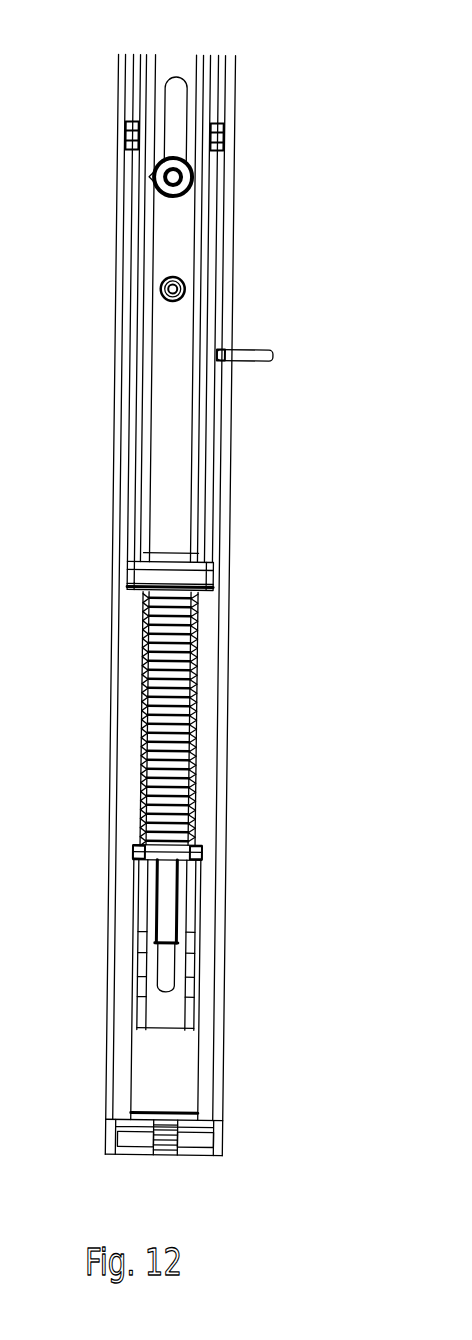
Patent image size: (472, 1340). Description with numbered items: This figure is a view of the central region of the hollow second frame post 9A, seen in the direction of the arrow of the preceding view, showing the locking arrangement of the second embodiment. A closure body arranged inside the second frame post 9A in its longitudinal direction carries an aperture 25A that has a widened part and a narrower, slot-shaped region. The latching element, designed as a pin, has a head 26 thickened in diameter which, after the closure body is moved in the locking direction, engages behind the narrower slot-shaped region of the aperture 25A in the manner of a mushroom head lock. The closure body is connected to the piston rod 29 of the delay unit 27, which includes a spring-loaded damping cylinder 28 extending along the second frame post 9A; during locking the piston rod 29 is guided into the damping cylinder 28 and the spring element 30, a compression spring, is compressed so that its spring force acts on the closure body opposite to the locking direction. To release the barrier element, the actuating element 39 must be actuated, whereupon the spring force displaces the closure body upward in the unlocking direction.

The second frame post 9A is at (113, 765).
The aperture 25A is at (173, 80).
The head 26 is at (163, 196).
The actuating element 39 is at (255, 359).
The piston rod 29 is at (172, 574).
The spring element 30 is at (188, 814).
The delay unit 27 is at (201, 990).
The damping cylinder 28 is at (150, 1092).